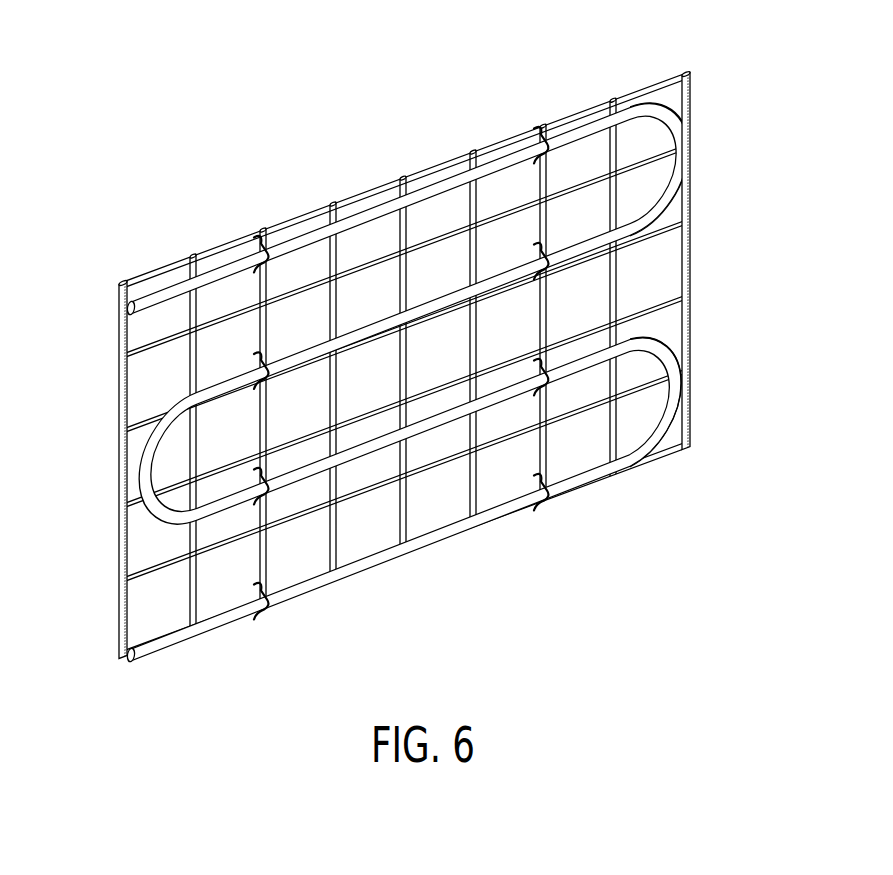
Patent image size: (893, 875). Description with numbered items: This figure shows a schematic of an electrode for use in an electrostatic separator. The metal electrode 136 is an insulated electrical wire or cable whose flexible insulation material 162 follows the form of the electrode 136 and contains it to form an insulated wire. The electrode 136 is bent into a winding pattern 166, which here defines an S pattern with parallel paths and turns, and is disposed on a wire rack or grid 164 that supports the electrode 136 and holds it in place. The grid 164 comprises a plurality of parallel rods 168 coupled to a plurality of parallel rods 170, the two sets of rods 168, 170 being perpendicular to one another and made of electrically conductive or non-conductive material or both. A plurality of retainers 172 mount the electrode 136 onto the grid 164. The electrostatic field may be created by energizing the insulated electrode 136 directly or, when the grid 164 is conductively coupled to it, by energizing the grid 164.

The electrode 136 is at (122, 658).
The insulation material 162 is at (157, 642).
The grid 164 is at (690, 277).
The winding pattern 166 is at (410, 358).
The parallel rods 168 is at (663, 160).
The parallel rods 170 is at (684, 73).
The retainers 172 is at (257, 250).